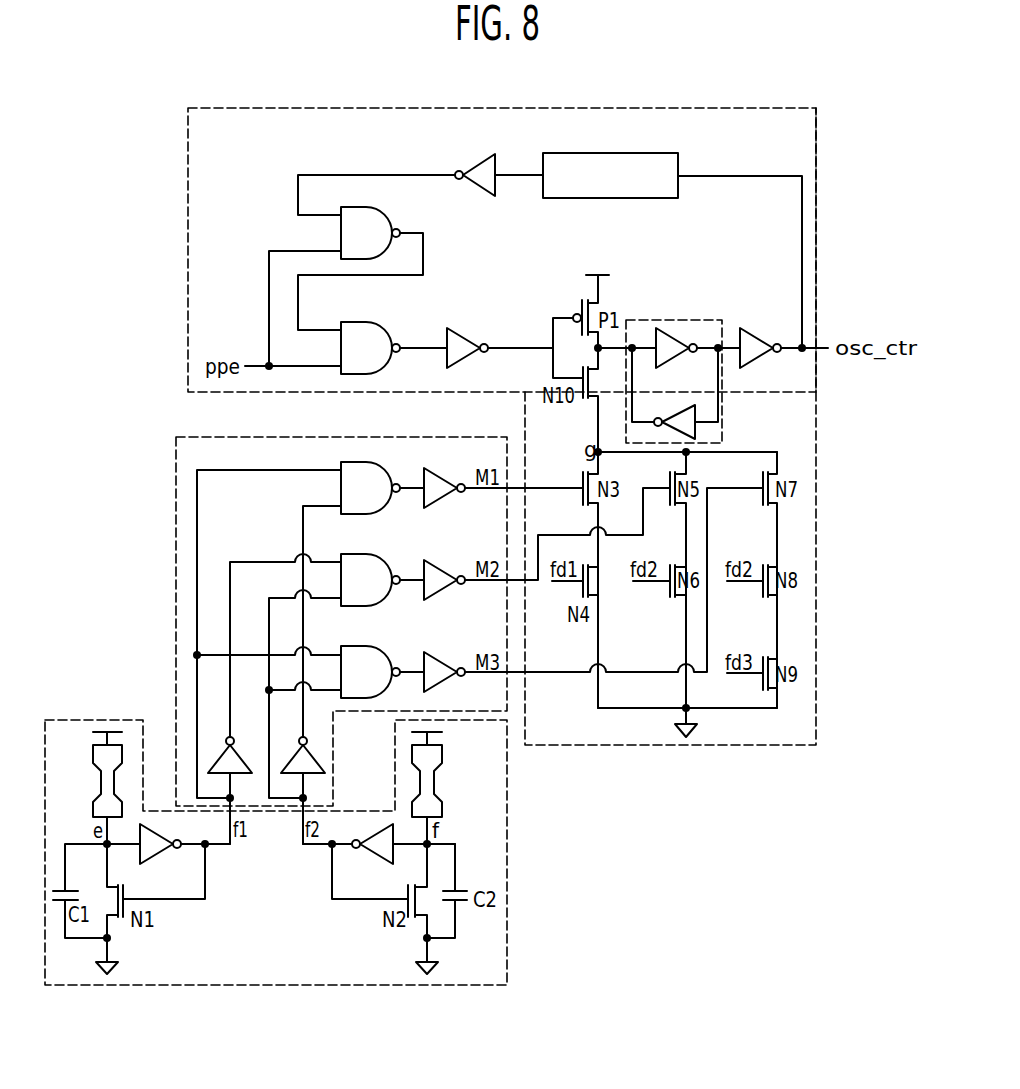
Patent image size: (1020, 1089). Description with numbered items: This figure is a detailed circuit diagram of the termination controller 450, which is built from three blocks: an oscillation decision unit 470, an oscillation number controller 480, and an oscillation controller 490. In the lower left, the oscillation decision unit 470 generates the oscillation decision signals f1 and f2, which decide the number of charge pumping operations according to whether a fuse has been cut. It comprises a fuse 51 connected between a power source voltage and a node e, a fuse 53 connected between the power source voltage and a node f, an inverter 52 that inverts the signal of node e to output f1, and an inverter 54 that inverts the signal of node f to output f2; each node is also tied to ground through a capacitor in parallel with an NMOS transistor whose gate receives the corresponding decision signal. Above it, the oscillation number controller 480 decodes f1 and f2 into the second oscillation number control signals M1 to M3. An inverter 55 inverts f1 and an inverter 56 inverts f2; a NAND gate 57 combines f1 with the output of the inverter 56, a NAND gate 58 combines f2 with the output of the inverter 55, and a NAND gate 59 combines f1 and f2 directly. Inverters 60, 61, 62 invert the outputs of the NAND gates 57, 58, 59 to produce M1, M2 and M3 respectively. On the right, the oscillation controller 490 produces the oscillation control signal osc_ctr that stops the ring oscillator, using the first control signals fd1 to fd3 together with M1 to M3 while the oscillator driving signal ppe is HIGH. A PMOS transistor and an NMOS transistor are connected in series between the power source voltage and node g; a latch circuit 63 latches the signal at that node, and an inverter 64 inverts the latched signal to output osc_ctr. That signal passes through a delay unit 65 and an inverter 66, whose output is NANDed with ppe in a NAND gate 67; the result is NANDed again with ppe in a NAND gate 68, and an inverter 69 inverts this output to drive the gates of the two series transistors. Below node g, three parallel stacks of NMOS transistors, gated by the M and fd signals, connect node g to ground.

The termination controller 450 is at (142, 138).
The oscillation decision unit 470 is at (507, 830).
The oscillation number controller 480 is at (325, 437).
The oscillation controller 490 is at (816, 143).
The fuse 51 is at (98, 788).
The inverter 52 is at (163, 840).
The fuse 53 is at (437, 788).
The inverter 54 is at (371, 853).
The inverter 55 is at (226, 753).
The inverter 56 is at (299, 753).
The NAND gate 57 is at (372, 478).
The NAND gate 58 is at (372, 571).
The NAND gate 59 is at (372, 663).
The inverter 60 is at (444, 475).
The inverter 61 is at (444, 568).
The inverter 62 is at (444, 660).
The latch circuit 63 is at (676, 320).
The inverter 64 is at (784, 340).
The delay unit 65 is at (610, 153).
The inverter 66 is at (471, 169).
The NAND gate 67 is at (370, 224).
The NAND gate 68 is at (370, 339).
The inverter 69 is at (467, 339).